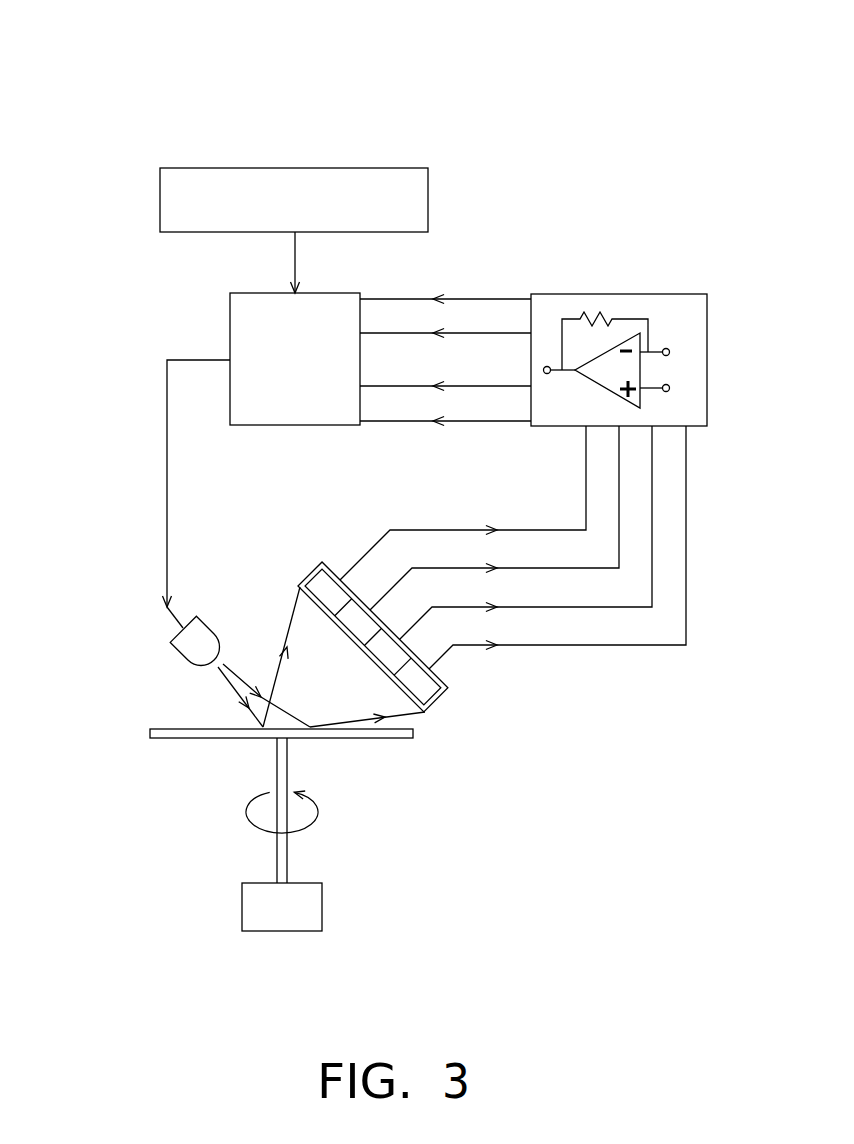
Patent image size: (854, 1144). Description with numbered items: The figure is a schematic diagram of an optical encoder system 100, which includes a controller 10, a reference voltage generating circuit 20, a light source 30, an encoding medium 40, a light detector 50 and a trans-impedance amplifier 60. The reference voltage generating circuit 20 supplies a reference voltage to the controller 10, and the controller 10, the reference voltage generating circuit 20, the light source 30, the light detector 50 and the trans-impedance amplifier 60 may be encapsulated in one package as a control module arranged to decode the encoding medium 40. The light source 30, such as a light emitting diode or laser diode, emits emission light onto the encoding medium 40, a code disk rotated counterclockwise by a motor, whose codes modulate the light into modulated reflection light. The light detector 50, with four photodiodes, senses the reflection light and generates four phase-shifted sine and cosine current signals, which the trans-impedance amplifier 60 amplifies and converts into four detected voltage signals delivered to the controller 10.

The optical encoder system 100 is at (150, 34).
The reference voltage generating circuit 20 is at (288, 168).
The controller 10 is at (230, 311).
The trans-impedance amplifier 60 is at (620, 294).
The light detector 50 is at (309, 560).
The light source 30 is at (180, 657).
The encoding medium 40 is at (148, 733).